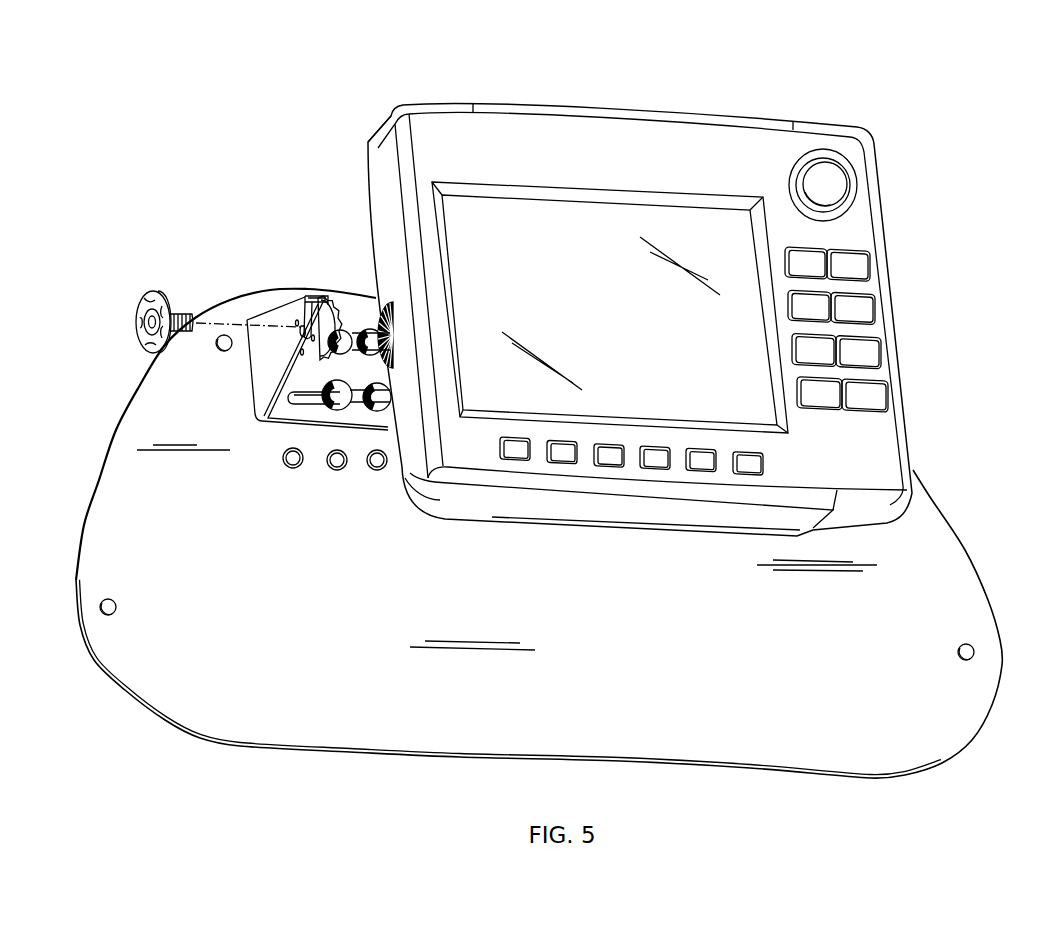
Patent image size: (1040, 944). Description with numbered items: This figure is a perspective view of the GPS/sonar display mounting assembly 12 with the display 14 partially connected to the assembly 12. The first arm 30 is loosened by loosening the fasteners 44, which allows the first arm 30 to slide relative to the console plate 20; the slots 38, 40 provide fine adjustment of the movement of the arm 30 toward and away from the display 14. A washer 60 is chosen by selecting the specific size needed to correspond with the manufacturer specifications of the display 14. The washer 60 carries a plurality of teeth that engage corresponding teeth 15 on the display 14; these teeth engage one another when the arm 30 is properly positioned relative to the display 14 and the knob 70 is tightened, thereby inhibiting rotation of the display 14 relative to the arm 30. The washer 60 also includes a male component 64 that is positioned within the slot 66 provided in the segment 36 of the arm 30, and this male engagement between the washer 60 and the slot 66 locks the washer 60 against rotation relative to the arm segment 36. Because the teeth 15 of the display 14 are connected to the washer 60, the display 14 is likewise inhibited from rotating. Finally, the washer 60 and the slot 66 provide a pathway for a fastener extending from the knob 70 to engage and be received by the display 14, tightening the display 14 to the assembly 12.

The GPS/sonar display mounting assembly 12 is at (958, 124).
The display 14 is at (631, 150).
The teeth 15 is at (400, 352).
The console plate 20 is at (940, 592).
The first arm 30 is at (228, 400).
The segment 36 is at (272, 318).
The slot 38 is at (354, 340).
The slot 40 is at (305, 405).
The fasteners 44 is at (369, 356).
The washer 60 is at (326, 302).
The male component 64 is at (311, 304).
The slot 66 is at (300, 340).
The knob 70 is at (150, 280).